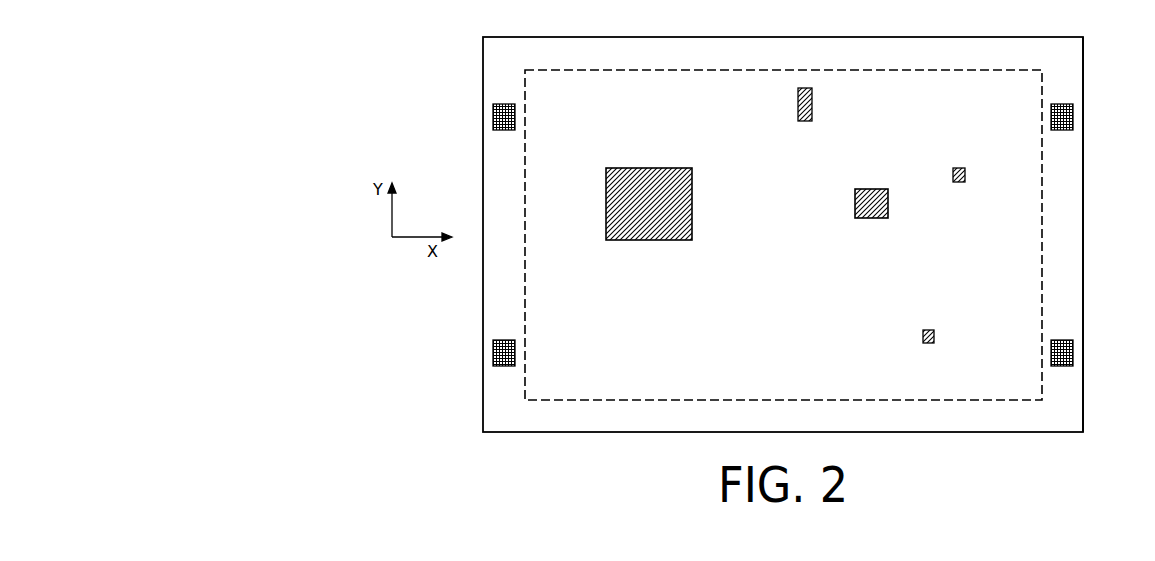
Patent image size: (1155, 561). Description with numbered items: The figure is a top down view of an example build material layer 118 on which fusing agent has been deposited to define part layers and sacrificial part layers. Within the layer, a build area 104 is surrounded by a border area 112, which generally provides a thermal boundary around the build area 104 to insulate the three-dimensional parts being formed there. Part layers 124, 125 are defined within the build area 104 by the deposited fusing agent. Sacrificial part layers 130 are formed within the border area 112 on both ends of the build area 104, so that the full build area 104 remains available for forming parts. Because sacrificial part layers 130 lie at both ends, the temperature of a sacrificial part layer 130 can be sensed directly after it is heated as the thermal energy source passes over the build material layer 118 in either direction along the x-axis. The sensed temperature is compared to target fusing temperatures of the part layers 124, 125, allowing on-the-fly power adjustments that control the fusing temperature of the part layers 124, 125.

The build area 104 is at (911, 400).
The border area 112 is at (508, 425).
The build material layer 118 is at (1084, 247).
The part layer 124 is at (650, 240).
The part layer 125 is at (870, 218).
The sacrificial part layer 130 is at (493, 113).